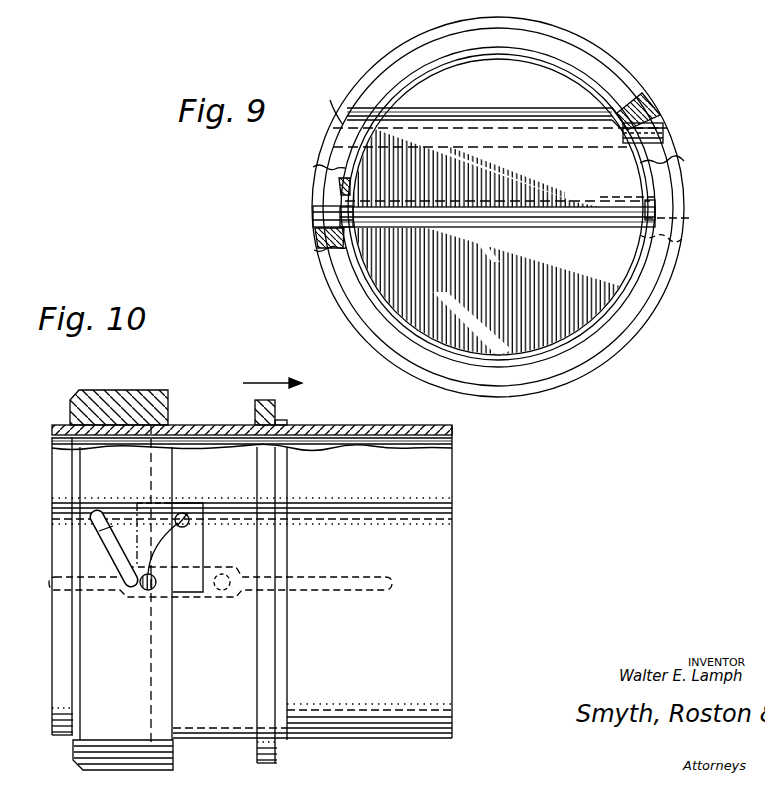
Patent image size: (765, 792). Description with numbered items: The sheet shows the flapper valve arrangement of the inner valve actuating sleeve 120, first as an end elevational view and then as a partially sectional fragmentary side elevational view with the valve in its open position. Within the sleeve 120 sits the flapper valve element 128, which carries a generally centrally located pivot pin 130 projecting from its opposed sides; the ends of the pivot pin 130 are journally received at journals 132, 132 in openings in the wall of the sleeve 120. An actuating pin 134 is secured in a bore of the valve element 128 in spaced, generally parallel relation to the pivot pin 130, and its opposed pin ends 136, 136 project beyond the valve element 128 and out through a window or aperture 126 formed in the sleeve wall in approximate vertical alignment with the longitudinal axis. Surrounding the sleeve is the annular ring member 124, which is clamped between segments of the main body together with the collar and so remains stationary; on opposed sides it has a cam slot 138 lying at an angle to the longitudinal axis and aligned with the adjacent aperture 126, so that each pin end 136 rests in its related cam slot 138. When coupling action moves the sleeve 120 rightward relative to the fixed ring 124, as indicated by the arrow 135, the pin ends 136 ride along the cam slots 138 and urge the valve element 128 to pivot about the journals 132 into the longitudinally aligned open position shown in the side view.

In FIG. 10, the inner valve actuating sleeve 120 is at (333, 428).
In FIG. 10, the ring member 124 is at (153, 391).
In FIG. 10, the window or aperture 126 is at (196, 556).
In FIG. 10, the flapper valve element 128 is at (357, 590).
In FIG. 9, the pivot pin 130 is at (542, 224).
In FIG. 9, the journals 132 is at (314, 212).
In FIG. 9, the actuating pin 134 is at (548, 127).
In FIG. 10, the arrow 135 is at (297, 358).
In FIG. 9, the pin ends 136 is at (341, 121).
In FIG. 10, the cam slot 138 is at (108, 514).